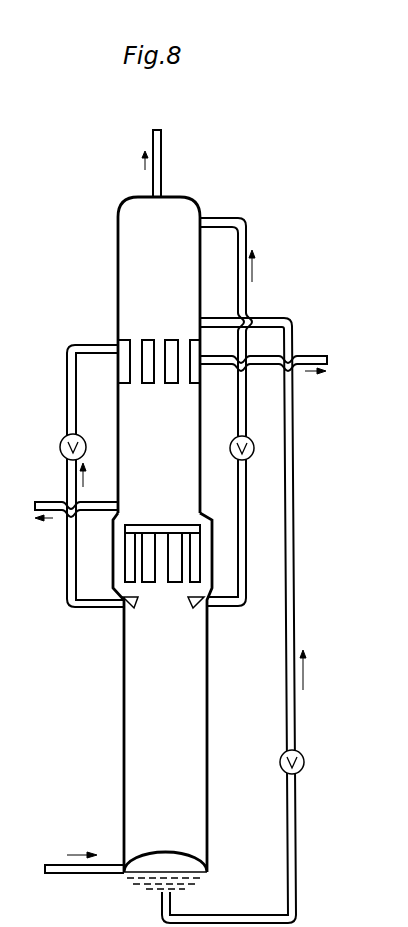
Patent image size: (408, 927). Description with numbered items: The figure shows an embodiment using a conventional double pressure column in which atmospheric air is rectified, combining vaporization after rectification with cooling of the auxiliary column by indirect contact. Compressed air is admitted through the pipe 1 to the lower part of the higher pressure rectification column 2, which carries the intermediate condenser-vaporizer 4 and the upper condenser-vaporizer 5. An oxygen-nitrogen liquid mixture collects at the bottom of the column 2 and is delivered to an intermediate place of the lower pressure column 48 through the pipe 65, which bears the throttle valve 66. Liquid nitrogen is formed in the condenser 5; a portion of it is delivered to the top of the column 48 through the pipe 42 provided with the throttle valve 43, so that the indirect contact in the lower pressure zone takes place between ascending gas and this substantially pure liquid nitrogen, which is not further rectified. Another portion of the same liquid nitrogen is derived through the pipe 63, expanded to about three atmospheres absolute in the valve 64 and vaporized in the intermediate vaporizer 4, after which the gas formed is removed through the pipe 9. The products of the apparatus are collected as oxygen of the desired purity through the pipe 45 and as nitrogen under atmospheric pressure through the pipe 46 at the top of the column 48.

The pipe 1 is at (85, 870).
The rectification column 2 is at (122, 728).
The intermediate condenser-vaporizer 4 is at (192, 353).
The upper condenser-vaporizer 5 is at (197, 563).
The pipe 9 is at (310, 355).
The pipe 42 is at (247, 520).
The throttle valve 43 is at (252, 438).
The pipe 45 is at (43, 498).
The pipe 46 is at (163, 163).
The lower pressure column 48 is at (118, 270).
The pipe 63 is at (70, 560).
The valve 64 is at (60, 445).
The pipe 65 is at (296, 860).
The throttle valve 66 is at (305, 760).